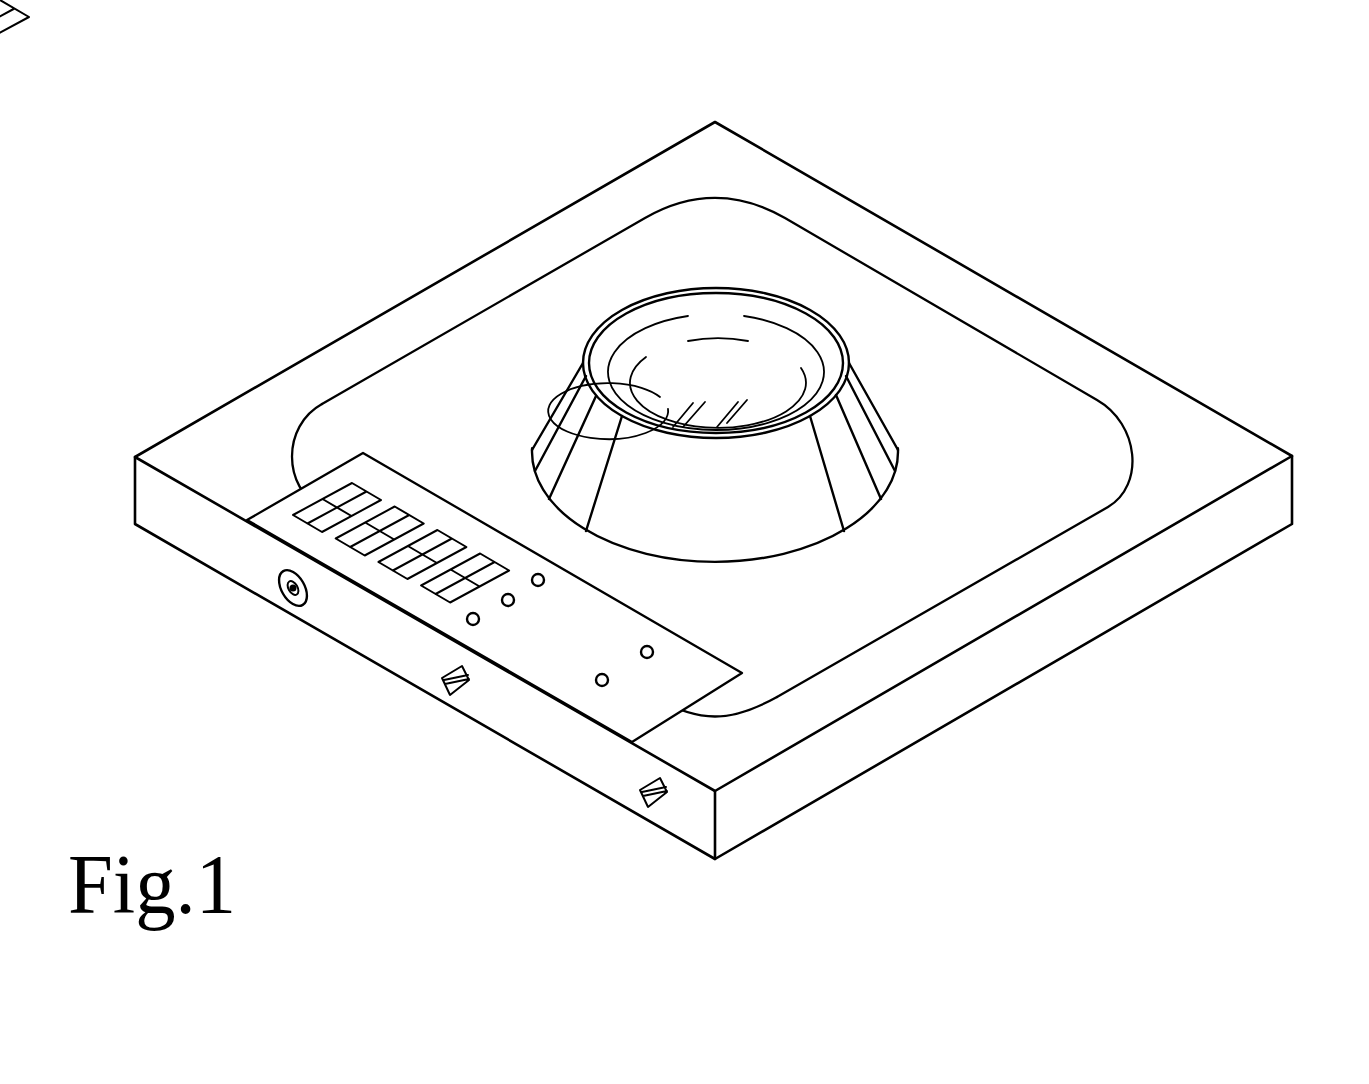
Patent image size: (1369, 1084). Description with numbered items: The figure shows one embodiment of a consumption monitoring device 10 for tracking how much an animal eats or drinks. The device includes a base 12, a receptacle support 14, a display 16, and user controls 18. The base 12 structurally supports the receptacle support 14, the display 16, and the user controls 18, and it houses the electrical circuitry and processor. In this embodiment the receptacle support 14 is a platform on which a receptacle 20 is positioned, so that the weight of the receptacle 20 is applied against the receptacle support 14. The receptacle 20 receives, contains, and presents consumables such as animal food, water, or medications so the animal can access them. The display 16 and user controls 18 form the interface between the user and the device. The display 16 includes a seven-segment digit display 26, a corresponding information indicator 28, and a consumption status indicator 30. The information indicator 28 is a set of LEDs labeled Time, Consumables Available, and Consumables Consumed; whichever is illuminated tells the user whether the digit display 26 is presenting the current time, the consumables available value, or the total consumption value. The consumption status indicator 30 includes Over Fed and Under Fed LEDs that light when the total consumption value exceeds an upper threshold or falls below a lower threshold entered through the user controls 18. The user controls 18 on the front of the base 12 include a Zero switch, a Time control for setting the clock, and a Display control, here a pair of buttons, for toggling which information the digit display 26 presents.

The consumption monitoring device 10 is at (1078, 240).
The base 12 is at (1200, 430).
The receptacle support 14 is at (973, 530).
The display 16 is at (370, 473).
The user controls 18 is at (420, 678).
The receptacle 20 is at (682, 338).
The seven-segment digit display 26 is at (306, 505).
The information indicator 28 is at (628, 630).
The consumption status indicator 30 is at (682, 709).